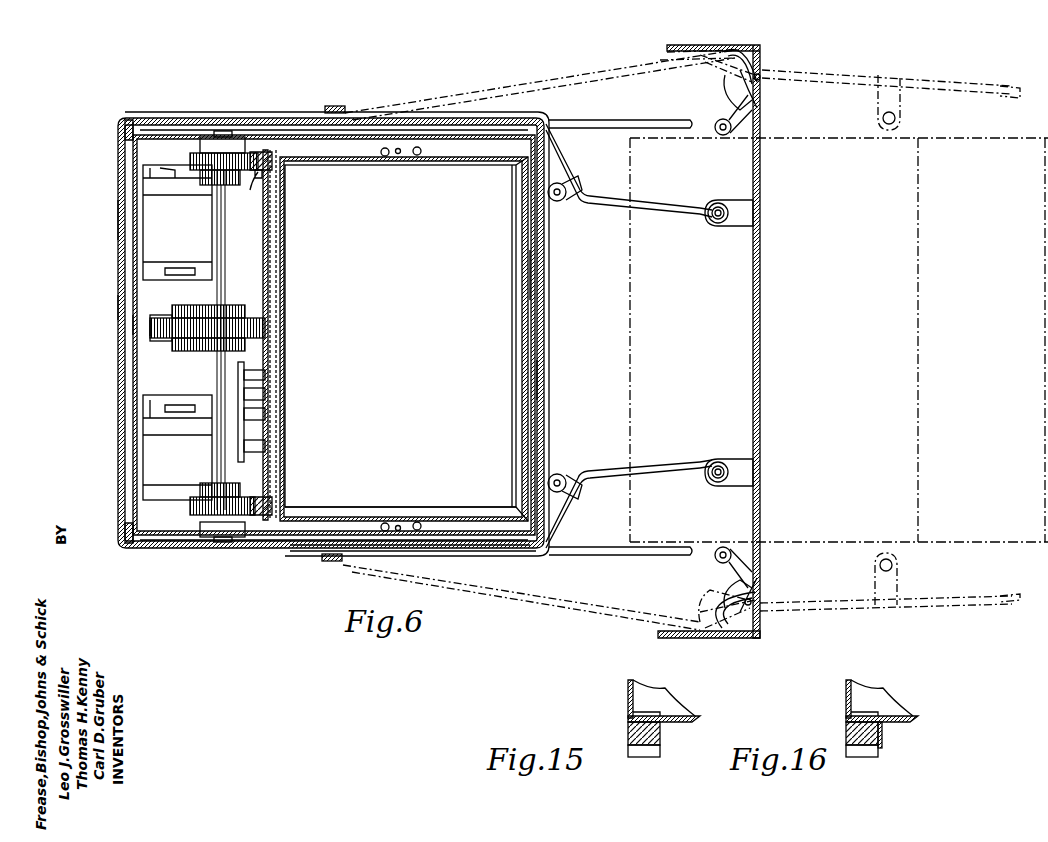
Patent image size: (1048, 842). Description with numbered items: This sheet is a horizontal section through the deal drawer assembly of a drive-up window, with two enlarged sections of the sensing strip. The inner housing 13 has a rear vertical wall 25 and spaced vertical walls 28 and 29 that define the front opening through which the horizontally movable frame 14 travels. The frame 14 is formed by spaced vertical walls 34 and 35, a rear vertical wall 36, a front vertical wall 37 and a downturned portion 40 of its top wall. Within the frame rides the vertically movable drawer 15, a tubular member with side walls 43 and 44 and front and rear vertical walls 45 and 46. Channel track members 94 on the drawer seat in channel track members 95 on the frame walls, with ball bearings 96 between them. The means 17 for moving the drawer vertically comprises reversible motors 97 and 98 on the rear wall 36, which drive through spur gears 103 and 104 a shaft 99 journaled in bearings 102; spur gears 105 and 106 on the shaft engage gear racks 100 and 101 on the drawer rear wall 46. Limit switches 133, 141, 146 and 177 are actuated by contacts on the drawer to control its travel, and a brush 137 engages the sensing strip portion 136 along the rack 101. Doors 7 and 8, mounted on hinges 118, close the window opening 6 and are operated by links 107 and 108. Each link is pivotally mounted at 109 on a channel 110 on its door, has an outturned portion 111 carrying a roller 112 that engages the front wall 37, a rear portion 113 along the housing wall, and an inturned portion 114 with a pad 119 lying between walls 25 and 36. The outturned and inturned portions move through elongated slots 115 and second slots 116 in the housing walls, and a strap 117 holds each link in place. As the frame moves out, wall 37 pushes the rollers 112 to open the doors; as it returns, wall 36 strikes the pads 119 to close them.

In FIG. 6, the opening 6 is at (770, 592).
In FIG. 6, the door 7 is at (760, 418).
In FIG. 6, the door 8 is at (898, 72).
In FIG. 6, the inner housing 13 is at (106, 221).
In FIG. 6, the horizontally movable frame 14 is at (540, 280).
In FIG. 6, the drawer 15 is at (532, 333).
In FIG. 6, the means for moving the tray vertically 17 is at (155, 350).
In FIG. 6, the rear vertical wall 25 is at (118, 307).
In FIG. 6, the vertical wall 28 is at (486, 553).
In FIG. 6, the vertical wall 29 is at (462, 118).
In FIG. 6, the vertical wall 34 is at (462, 548).
In FIG. 6, the vertical wall 35 is at (485, 137).
In FIG. 6, the rear vertical wall 36 is at (133, 326).
In FIG. 6, the front vertical wall 37 is at (538, 382).
In FIG. 6, the downturned portion 40 is at (268, 262).
In FIG. 6, the side wall 43 is at (345, 510).
In FIG. 6, the side wall 44 is at (364, 164).
In FIG. 15, the side wall 44 is at (628, 688).
In FIG. 16, the side wall 44 is at (846, 688).
In FIG. 6, the front vertical wall 45 is at (522, 268).
In FIG. 6, the rear vertical wall 46 is at (274, 326).
In FIG. 15, the rear vertical wall 46 is at (690, 714).
In FIG. 16, the rear vertical wall 46 is at (903, 714).
In FIG. 6, the channel track member 94 is at (400, 155).
In FIG. 6, the channel track member 95 is at (421, 153).
In FIG. 6, the ball bearing 96 is at (381, 151).
In FIG. 6, the reversible motor 97 is at (185, 225).
In FIG. 6, the reversible motor 98 is at (182, 454).
In FIG. 6, the shaft 99 is at (225, 238).
In FIG. 6, the gear rack 100 is at (268, 500).
In FIG. 6, the gear rack 101 is at (268, 166).
In FIG. 15, the gear rack 101 is at (642, 740).
In FIG. 16, the gear rack 101 is at (846, 728).
In FIG. 6, the bearing 102 is at (228, 143).
In FIG. 6, the spur gear 103 is at (166, 333).
In FIG. 6, the spur gear 104 is at (235, 333).
In FIG. 6, the spur gear 105 is at (192, 508).
In FIG. 6, the spur gear 106 is at (196, 158).
In FIG. 6, the link 107 is at (645, 470).
In FIG. 6, the link 108 is at (660, 208).
In FIG. 6, the pivot 109 is at (716, 223).
In FIG. 6, the channel 110 is at (725, 200).
In FIG. 6, the outturned portion 111 is at (573, 160).
In FIG. 6, the roller 112 is at (558, 202).
In FIG. 6, the rear portion 113 is at (498, 118).
In FIG. 6, the inturned portion 114 is at (118, 130).
In FIG. 6, the elongated slot 115 is at (612, 128).
In FIG. 6, the second elongated slot 116 is at (200, 128).
In FIG. 6, the strap 117 is at (337, 106).
In FIG. 6, the hinge 118 is at (762, 68).
In FIG. 6, the pad 119 is at (135, 124).
In FIG. 6, the limit switch 133 is at (265, 412).
In FIG. 16, the sensing strip portion 136 is at (882, 740).
In FIG. 6, the brush 137 is at (257, 176).
In FIG. 6, the normally open switch 141 is at (265, 393).
In FIG. 6, the limit switch 146 is at (265, 452).
In FIG. 6, the limit switch 177 is at (265, 377).